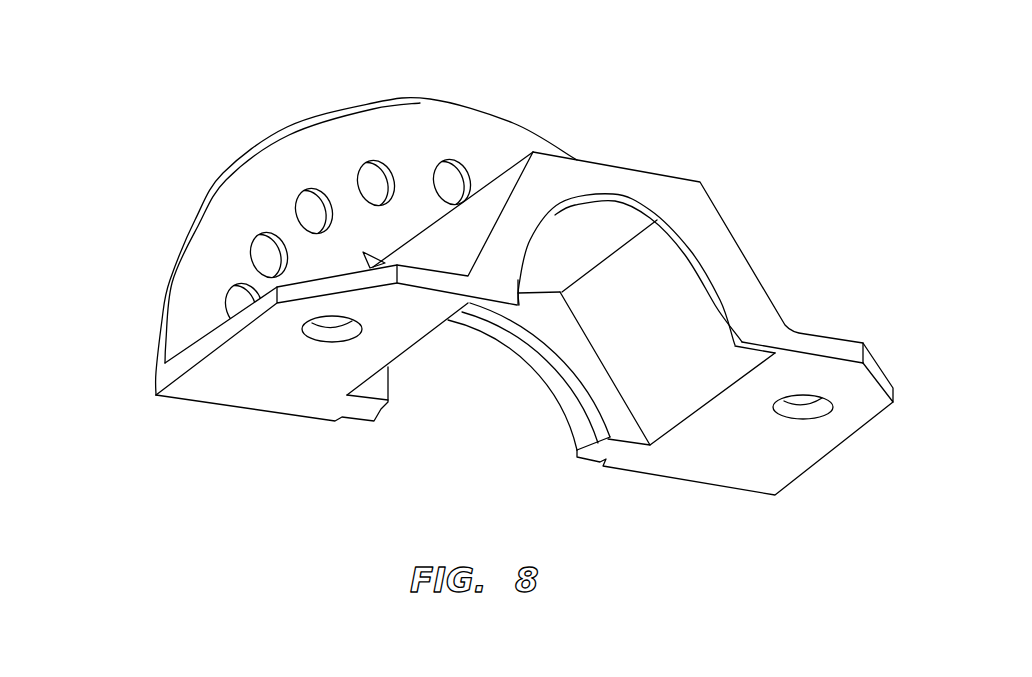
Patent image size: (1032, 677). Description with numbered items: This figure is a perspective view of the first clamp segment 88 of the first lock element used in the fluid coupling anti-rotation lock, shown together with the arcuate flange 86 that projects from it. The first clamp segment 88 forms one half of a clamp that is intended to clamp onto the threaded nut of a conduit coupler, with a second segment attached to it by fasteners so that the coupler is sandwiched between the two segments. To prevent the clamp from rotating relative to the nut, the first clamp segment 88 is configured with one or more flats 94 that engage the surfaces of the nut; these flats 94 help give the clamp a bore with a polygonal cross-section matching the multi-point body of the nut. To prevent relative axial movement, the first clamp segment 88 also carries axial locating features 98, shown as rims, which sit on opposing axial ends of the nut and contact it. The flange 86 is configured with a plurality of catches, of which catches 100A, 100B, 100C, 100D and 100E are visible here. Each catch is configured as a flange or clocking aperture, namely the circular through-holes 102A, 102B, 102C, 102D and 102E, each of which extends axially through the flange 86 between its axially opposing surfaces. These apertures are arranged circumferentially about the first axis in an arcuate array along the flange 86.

The flange 86 is at (458, 101).
The first clamp segment 88 is at (725, 213).
The flat 94 is at (413, 348).
The axial locating feature 98 is at (722, 290).
The catch 100A is at (158, 265).
The flange aperture 102A is at (228, 298).
The catch 100B is at (200, 200).
The flange aperture 102B is at (258, 243).
The catch 100C is at (272, 149).
The flange aperture 102C is at (302, 197).
The catch 100D is at (375, 115).
The flange aperture 102D is at (378, 168).
The catch 100E is at (533, 137).
The flange aperture 102E is at (460, 164).